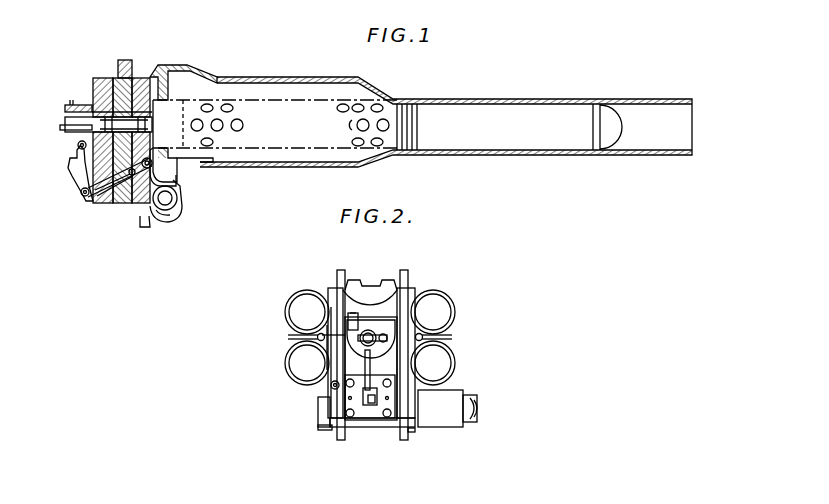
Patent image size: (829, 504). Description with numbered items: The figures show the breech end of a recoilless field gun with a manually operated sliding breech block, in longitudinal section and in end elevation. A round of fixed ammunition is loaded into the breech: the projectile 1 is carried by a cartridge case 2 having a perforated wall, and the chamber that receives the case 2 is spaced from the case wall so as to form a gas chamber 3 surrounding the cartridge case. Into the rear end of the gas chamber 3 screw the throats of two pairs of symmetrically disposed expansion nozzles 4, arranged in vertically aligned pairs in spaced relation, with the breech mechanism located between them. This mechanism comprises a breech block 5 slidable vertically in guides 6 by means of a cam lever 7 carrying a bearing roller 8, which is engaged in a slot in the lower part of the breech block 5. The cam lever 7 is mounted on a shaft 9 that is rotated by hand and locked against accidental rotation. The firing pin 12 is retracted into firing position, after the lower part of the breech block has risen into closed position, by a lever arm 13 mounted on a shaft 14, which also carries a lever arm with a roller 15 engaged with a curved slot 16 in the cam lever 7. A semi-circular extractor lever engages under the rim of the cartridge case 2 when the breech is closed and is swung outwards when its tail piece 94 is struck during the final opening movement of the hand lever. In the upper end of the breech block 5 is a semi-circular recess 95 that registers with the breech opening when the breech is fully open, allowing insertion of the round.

In FIG. 1, the projectile 1 is at (476, 110).
In FIG. 1, the cartridge case 2 is at (252, 117).
In FIG. 1, the gas chamber 3 is at (302, 90).
In FIG. 2, the expansion nozzles 4 is at (297, 293).
In FIG. 1, the breech block 5 is at (100, 78).
In FIG. 2, the breech block 5 is at (390, 367).
In FIG. 1, the guides 6 is at (143, 78).
In FIG. 2, the guides 6 is at (332, 297).
In FIG. 1, the cam lever 7 is at (168, 208).
In FIG. 1, the bearing roller 8 is at (162, 72).
In FIG. 1, the shaft 9 is at (177, 202).
In FIG. 1, the firing pin 12 is at (112, 63).
In FIG. 1, the lever arm 13 is at (71, 165).
In FIG. 1, the shaft 14 is at (110, 186).
In FIG. 1, the roller 15 is at (170, 216).
In FIG. 1, the curved slot 16 is at (168, 180).
In FIG. 1, the tail piece 94 is at (160, 207).
In FIG. 2, the semi-circular recess 95 is at (353, 286).